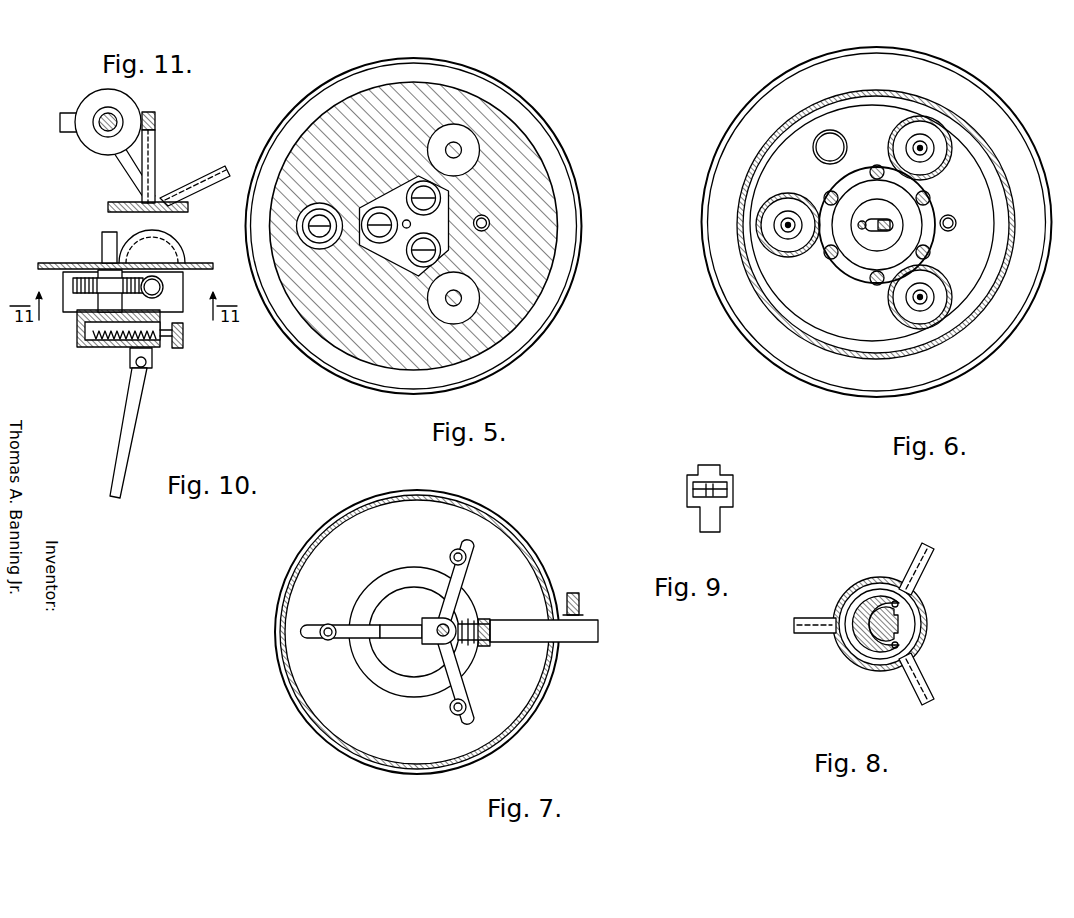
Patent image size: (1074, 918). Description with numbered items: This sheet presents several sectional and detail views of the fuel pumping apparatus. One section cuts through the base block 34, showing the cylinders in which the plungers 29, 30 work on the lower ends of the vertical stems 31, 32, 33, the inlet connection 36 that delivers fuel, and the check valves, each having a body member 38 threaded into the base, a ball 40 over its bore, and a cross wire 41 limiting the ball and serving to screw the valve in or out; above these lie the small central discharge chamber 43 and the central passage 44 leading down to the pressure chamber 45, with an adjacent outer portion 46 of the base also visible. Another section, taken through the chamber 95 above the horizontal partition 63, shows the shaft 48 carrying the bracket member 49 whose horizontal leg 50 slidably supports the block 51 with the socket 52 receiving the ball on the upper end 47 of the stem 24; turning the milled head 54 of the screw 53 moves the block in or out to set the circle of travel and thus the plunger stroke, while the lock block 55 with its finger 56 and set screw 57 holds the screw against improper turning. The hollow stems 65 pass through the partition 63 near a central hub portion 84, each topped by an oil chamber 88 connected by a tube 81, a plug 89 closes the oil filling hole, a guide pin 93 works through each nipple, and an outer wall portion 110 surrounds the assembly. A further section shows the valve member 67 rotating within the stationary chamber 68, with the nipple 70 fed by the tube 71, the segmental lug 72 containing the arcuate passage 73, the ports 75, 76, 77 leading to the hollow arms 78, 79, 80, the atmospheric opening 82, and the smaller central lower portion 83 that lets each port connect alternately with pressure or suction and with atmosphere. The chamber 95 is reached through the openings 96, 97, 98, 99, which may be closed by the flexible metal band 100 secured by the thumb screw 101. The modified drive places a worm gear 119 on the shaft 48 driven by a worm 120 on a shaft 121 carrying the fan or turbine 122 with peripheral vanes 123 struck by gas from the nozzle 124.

In FIG. 6, the stem 24 is at (878, 228).
In FIG. 7, the stem 24 is at (443, 633).
In FIG. 10, the stem 24 is at (128, 440).
In FIG. 5, the plunger 29 is at (462, 300).
In FIG. 5, the plunger 30 is at (458, 152).
In FIG. 9, the vertical stem 31 is at (705, 520).
In FIG. 5, the vertical stem 32 is at (462, 303).
In FIG. 5, the vertical stem 33 is at (470, 123).
In FIG. 5, the base block 34 is at (556, 268).
In FIG. 5, the inlet connection 36 is at (492, 224).
In FIG. 6, the inlet connection 36 is at (948, 232).
In FIG. 5, the body member 38 is at (312, 228).
In FIG. 5, the ball 40 is at (318, 222).
In FIG. 5, the cross wire 41 is at (318, 235).
In FIG. 5, the central discharge chamber 43 is at (445, 218).
In FIG. 5, the central passage 44 is at (385, 190).
In FIG. 5, the pressure chamber 45 is at (376, 376).
In FIG. 5, the rim 46 is at (400, 395).
In FIG. 10, the upper end of the stem 47 is at (152, 362).
In FIG. 11, the shaft 48 is at (103, 132).
In FIG. 10, the shaft 48 is at (108, 245).
In FIG. 7, the bracket member 49 is at (383, 614).
In FIG. 10, the bracket member 49 is at (80, 330).
In FIG. 7, the horizontal leg 50 is at (402, 630).
In FIG. 10, the horizontal leg 50 is at (95, 340).
In FIG. 7, the block 51 is at (432, 620).
In FIG. 10, the block 51 is at (140, 362).
In FIG. 10, the socket 52 is at (130, 355).
In FIG. 10, the screw 53 is at (86, 345).
In FIG. 7, the milled head 54 is at (491, 624).
In FIG. 10, the milled head 54 is at (182, 348).
In FIG. 10, the lock block 55 is at (170, 296).
In FIG. 10, the finger 56 is at (185, 330).
In FIG. 10, the set screw 57 is at (172, 322).
In FIG. 6, the horizontal partition 63 is at (805, 280).
In FIG. 6, the hollow stem 65 is at (921, 148).
In FIG. 8, the valve member 67 is at (857, 660).
In FIG. 8, the stationary chamber 68 is at (872, 672).
In FIG. 7, the nipple 70 is at (455, 620).
In FIG. 7, the tube 71 is at (572, 643).
In FIG. 8, the segmental lug 72 is at (850, 604).
In FIG. 8, the arcuate passage 73 is at (848, 645).
In FIG. 8, the port 75 is at (850, 617).
In FIG. 8, the port 76 is at (897, 648).
In FIG. 8, the port 77 is at (897, 606).
In FIG. 7, the hollow arm 78 is at (352, 634).
In FIG. 8, the hollow arm 78 is at (800, 637).
In FIG. 7, the hollow arm 79 is at (468, 583).
In FIG. 8, the hollow arm 79 is at (908, 690).
In FIG. 7, the hollow arm 80 is at (456, 700).
In FIG. 8, the hollow arm 80 is at (925, 572).
In FIG. 7, the tube 81 is at (464, 535).
In FIG. 8, the opening 82 is at (926, 628).
In FIG. 8, the central lower portion 83 is at (900, 621).
In FIG. 6, the hub plate 84 is at (890, 195).
In FIG. 6, the chamber 88 is at (940, 150).
In FIG. 6, the plug 89 is at (814, 142).
In FIG. 6, the guide pin 93 is at (921, 149).
In FIG. 6, the chamber 95 is at (853, 315).
In FIG. 7, the chamber 95 is at (330, 572).
In FIG. 7, the opening 96 is at (420, 510).
In FIG. 7, the opening 97 is at (522, 575).
In FIG. 10, the opening 97 is at (50, 253).
In FIG. 7, the opening 98 is at (402, 768).
In FIG. 7, the opening 99 is at (300, 680).
In FIG. 7, the flexible metal band 100 is at (280, 630).
In FIG. 7, the thumb screw 101 is at (580, 603).
In FIG. 6, the outer rim 110 is at (762, 348).
In FIG. 11, the worm gear 119 is at (130, 104).
In FIG. 10, the worm gear 119 is at (73, 284).
In FIG. 11, the worm 120 is at (158, 123).
In FIG. 10, the worm 120 is at (185, 283).
In FIG. 11, the shaft 121 is at (158, 154).
In FIG. 10, the shaft 121 is at (158, 282).
In FIG. 11, the fan or turbine 122 is at (108, 206).
In FIG. 10, the fan or turbine 122 is at (185, 290).
In FIG. 11, the vanes 123 is at (142, 210).
In FIG. 10, the vanes 123 is at (137, 291).
In FIG. 11, the nozzle 124 is at (180, 194).